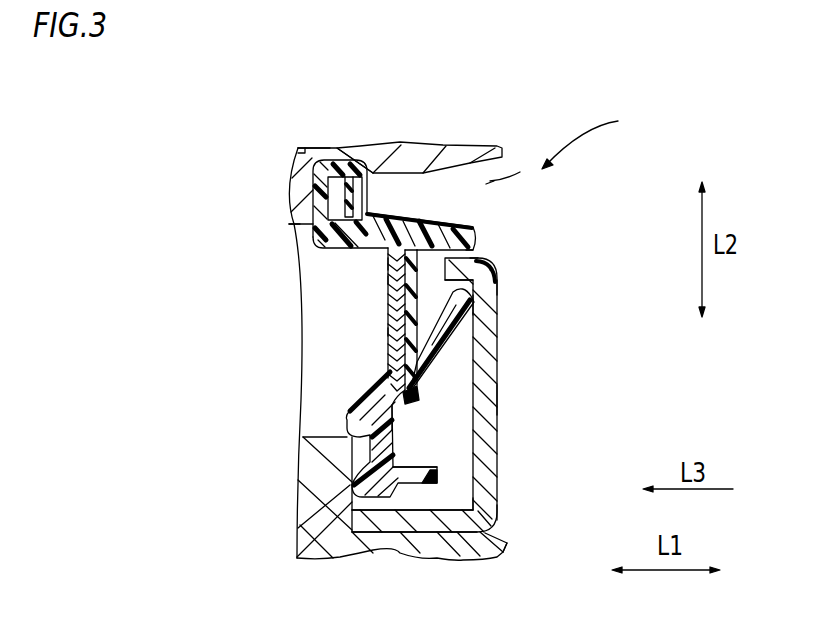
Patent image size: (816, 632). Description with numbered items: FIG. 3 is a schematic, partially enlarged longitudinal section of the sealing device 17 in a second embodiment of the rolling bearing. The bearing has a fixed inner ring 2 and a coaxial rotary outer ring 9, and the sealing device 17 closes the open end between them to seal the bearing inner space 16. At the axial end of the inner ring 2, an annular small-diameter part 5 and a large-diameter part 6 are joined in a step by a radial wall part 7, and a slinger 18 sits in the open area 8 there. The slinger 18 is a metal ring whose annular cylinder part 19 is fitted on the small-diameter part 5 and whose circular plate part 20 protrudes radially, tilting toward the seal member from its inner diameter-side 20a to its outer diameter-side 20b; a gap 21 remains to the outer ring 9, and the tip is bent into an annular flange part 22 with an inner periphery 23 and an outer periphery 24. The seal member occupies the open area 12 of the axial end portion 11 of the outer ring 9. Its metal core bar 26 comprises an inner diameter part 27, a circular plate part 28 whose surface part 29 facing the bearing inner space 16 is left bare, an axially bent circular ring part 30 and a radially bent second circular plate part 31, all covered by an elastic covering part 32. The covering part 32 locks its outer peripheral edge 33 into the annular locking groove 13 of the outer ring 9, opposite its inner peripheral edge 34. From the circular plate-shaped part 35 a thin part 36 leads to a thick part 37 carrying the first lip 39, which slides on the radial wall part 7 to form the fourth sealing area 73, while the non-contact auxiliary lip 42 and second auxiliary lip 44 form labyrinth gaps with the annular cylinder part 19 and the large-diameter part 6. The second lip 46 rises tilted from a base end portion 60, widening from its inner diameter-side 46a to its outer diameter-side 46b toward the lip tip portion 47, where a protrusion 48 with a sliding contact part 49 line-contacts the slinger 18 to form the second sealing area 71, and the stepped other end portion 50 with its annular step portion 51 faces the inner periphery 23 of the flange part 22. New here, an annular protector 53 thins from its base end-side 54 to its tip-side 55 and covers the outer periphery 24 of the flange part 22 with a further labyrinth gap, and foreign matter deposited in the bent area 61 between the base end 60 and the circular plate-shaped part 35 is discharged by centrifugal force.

The inner ring 2 is at (482, 552).
The annular small-diameter part 5 is at (352, 532).
The large-diameter part 6 is at (350, 427).
The radial wall part 7 is at (352, 449).
The open area 8 is at (478, 505).
The outer ring 9 is at (474, 153).
The axial end portion 11 is at (491, 181).
The open area 12 is at (291, 221).
The annular locking groove 13 is at (320, 148).
The bearing inner space 16 is at (296, 374).
The sealing device 17 is at (581, 142).
The slinger 18 is at (505, 548).
The annular cylinder part 19 is at (404, 527).
The circular plate part 20 is at (499, 402).
The inner diameter-side 20a is at (498, 522).
The outer diameter-side 20b is at (498, 285).
The gap 21 is at (488, 183).
The annular flange part 22 is at (477, 258).
The inner periphery 23 is at (492, 270).
The outer periphery 24 is at (473, 252).
The core bar 26 is at (388, 332).
The inner diameter part 27 is at (405, 398).
The circular plate part 28 is at (388, 264).
The surface part 29 is at (288, 222).
The circular ring part 30 is at (352, 172).
The second circular plate part 31 is at (290, 208).
The covering part 32 is at (369, 170).
The outer peripheral edge 33 is at (318, 188).
The inner peripheral edge 34 is at (392, 432).
The circular plate-shaped part 35 is at (388, 280).
The thin part 36 is at (437, 466).
The thick part 37 is at (300, 548).
The first annular lip 39 is at (352, 460).
The non-contact auxiliary lip 42 is at (497, 483).
The second auxiliary lip 44 is at (358, 408).
The second annular lip 46 is at (485, 338).
The inner diameter-side 46a is at (499, 400).
The outer diameter-side 46b is at (475, 303).
The lip tip portion 47 is at (474, 307).
The annular protrusion 48 is at (474, 310).
The sliding contact part 49 is at (474, 305).
The other end portion 50 is at (388, 320).
The annular step portion 51 is at (388, 302).
The annular protector 53 is at (412, 222).
The base end-side 54 is at (377, 208).
The tip-side 55 is at (442, 225).
The lip base end portion 60 is at (388, 347).
The bent area 61 is at (411, 358).
The second sealing area 71 is at (475, 303).
The fourth sealing area 73 is at (350, 486).